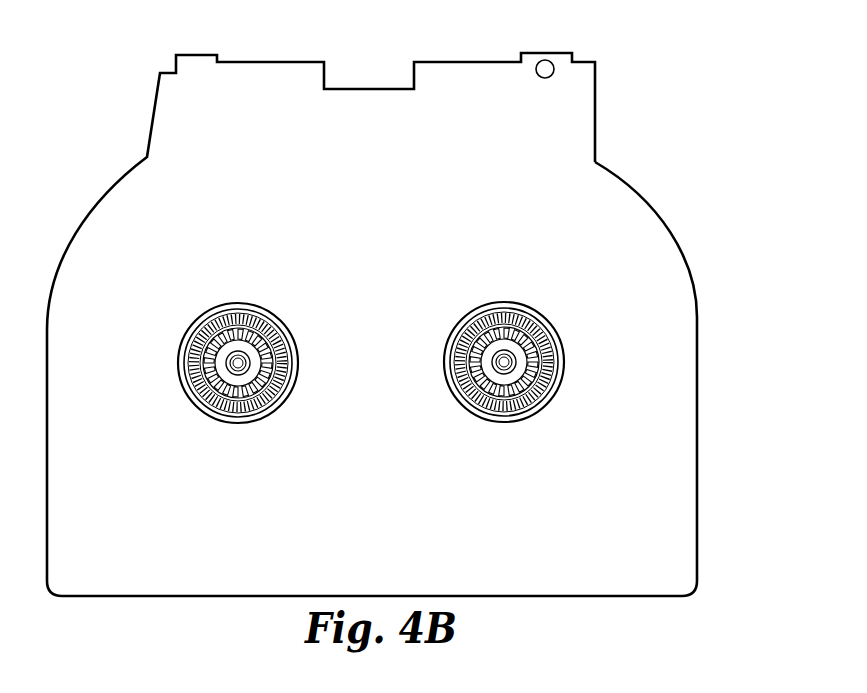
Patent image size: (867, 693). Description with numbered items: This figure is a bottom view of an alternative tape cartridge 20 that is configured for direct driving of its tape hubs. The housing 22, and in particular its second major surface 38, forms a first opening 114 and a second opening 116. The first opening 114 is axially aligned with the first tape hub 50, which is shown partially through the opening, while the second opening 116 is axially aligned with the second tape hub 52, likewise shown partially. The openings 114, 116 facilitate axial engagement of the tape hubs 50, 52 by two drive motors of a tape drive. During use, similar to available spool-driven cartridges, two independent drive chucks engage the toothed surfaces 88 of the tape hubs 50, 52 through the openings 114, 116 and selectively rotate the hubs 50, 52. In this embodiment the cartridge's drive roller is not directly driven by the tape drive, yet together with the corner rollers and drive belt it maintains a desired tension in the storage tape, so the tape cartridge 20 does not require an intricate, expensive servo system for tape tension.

The tape cartridge 20 is at (400, 309).
The housing 22 is at (677, 235).
The second major surface 38 is at (673, 365).
The first tape hub 50 is at (264, 368).
The second tape hub 52 is at (529, 365).
The toothed surface 88 is at (207, 383).
The first opening 114 is at (275, 407).
The second opening 116 is at (540, 405).